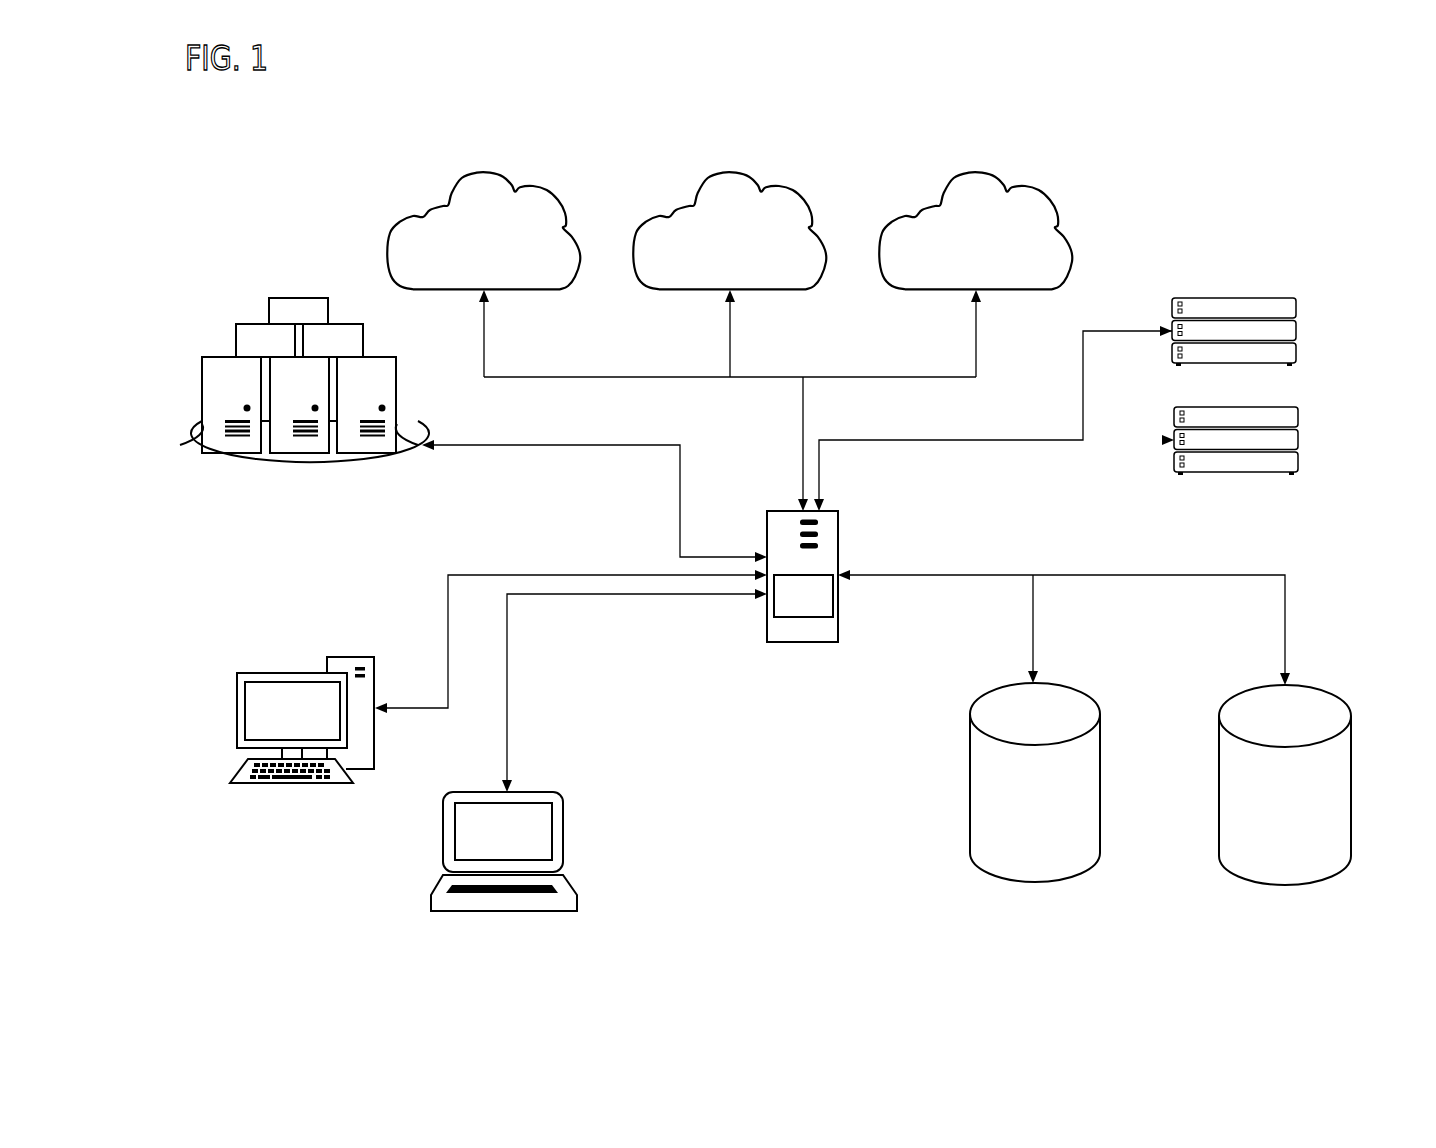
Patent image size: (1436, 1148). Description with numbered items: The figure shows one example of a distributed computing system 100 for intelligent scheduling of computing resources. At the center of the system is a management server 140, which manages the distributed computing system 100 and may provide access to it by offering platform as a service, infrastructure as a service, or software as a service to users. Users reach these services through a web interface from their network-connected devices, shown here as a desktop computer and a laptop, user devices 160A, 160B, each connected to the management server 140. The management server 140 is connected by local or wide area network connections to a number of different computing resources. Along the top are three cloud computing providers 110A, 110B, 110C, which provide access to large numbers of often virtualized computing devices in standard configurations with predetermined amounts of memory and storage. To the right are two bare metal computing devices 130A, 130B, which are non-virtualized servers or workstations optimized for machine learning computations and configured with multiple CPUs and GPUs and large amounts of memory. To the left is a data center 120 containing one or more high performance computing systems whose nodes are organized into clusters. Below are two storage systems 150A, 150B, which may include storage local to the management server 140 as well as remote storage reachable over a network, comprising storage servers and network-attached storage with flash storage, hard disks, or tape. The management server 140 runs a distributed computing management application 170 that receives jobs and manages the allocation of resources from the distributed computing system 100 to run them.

The distributed computing system 100 is at (1226, 64).
The cloud computing provider 110A is at (515, 180).
The cloud computing provider 110B is at (759, 180).
The cloud computing provider 110C is at (1005, 180).
The data center 120 is at (327, 478).
The bare metal computing device 130A is at (1296, 298).
The bare metal computing device 130B is at (1298, 407).
The management server 140 is at (770, 599).
The distributed computing management application 170 is at (803, 596).
The storage system 150A is at (975, 862).
The storage system 150B is at (1305, 880).
The user device 160A is at (258, 783).
The user device 160B is at (435, 911).